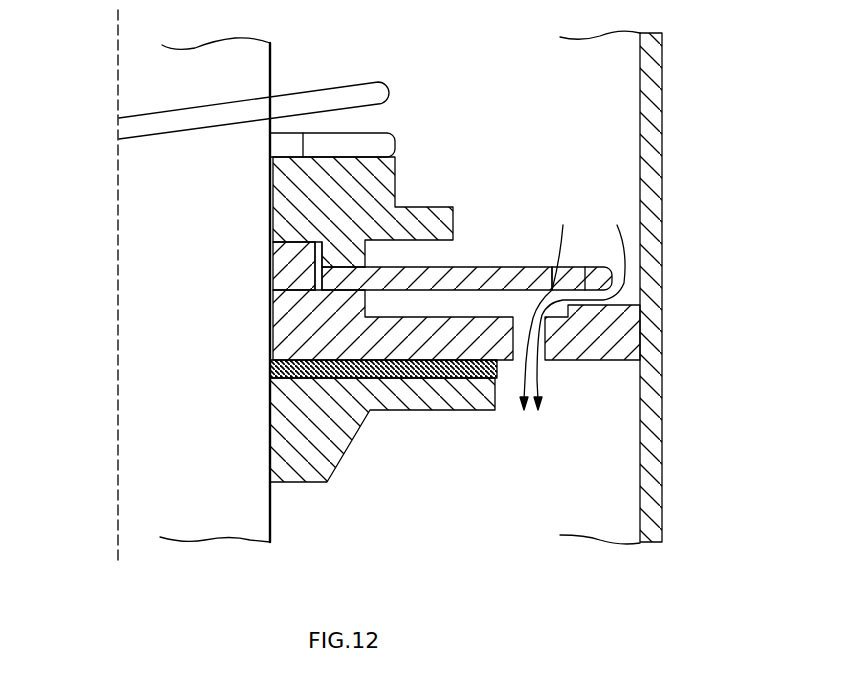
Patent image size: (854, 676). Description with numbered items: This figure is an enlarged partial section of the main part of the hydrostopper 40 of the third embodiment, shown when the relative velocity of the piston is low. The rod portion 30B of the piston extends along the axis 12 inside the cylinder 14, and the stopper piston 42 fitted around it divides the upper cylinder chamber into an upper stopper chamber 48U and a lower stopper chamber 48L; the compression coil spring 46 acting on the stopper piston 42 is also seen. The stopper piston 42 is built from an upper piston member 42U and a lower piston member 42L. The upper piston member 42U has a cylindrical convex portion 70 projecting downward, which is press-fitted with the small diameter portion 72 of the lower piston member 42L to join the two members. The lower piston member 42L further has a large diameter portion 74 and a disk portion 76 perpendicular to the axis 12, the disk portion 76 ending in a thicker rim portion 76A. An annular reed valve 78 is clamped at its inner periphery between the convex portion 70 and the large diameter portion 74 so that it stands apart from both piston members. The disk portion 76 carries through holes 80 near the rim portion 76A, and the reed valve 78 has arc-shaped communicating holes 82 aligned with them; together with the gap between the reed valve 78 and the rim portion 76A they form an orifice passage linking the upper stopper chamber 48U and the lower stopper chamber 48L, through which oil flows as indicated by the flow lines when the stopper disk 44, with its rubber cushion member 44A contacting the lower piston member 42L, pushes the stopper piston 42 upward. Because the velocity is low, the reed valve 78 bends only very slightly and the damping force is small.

The axis 12 is at (118, 260).
The rod portion 30B is at (137, 392).
The hydrostopper 40 is at (649, 287).
The cylinder 14 is at (649, 287).
The upper stopper chamber 48U is at (625, 168).
The lower stopper chamber 48L is at (625, 503).
The compression coil spring 46 is at (398, 92).
The stopper piston 42 is at (349, 298).
The upper piston member 42U is at (385, 175).
The lower piston member 42L is at (349, 348).
The convex portion 70 is at (350, 252).
The small diameter portion 72 is at (270, 252).
The large diameter portion 74 is at (332, 308).
The disk portion 76 is at (393, 345).
The rim portion 76A is at (623, 337).
The reed valve 78 is at (507, 265).
The communicating holes 82 is at (575, 275).
The through holes 80 is at (543, 352).
The stopper disk 44 is at (457, 400).
The cushion member 44A is at (300, 378).